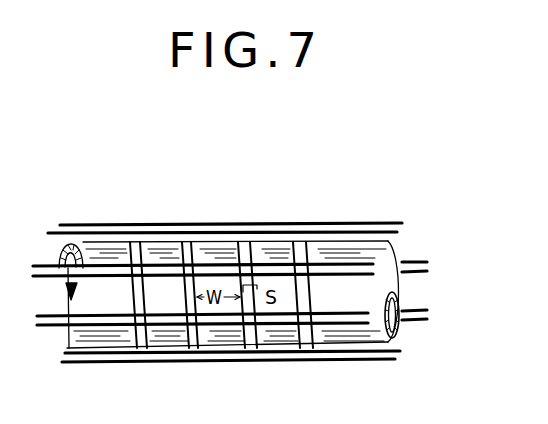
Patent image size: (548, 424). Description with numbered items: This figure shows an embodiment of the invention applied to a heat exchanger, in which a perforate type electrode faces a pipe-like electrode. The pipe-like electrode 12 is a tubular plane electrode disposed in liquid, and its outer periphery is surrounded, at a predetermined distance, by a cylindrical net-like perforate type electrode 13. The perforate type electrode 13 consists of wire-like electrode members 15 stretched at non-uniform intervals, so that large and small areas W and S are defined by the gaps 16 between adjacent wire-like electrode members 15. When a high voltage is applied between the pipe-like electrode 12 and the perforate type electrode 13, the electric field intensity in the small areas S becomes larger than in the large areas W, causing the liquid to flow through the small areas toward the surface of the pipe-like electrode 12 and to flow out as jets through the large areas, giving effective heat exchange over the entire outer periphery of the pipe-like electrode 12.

The pipe-like electrode 12 is at (382, 278).
The perforate type electrode 13 is at (230, 274).
The wire-like electrode members 15 is at (150, 230).
The gaps 16 is at (232, 229).